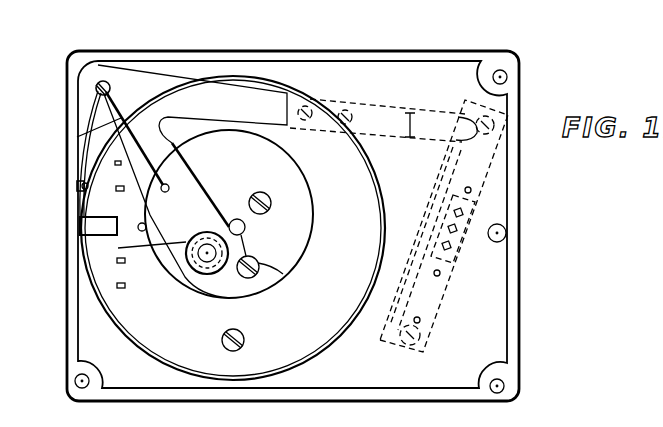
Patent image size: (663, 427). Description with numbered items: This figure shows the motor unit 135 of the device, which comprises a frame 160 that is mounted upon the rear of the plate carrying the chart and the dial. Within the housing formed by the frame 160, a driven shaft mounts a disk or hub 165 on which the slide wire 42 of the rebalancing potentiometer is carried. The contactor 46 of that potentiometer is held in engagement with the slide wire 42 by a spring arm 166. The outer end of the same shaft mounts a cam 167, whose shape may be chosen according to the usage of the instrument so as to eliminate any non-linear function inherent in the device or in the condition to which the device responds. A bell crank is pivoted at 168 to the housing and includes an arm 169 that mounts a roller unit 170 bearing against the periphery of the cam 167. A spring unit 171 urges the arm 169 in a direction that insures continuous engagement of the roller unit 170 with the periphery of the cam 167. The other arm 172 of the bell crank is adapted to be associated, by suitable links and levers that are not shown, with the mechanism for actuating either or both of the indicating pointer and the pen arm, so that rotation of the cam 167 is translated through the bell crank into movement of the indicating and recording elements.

The motor unit 135 is at (533, 312).
The frame 160 is at (522, 201).
The slide wire 42 is at (341, 328).
The disk or hub 165 is at (330, 333).
The cam 167 is at (297, 188).
The other arm of the bell crank 172 is at (246, 97).
The arm of the bell crank 169 is at (198, 198).
The pivot 168 is at (96, 88).
The spring unit 171 is at (66, 134).
The contactor 46 is at (78, 188).
The spring arm 166 is at (80, 204).
The roller unit 170 is at (204, 270).